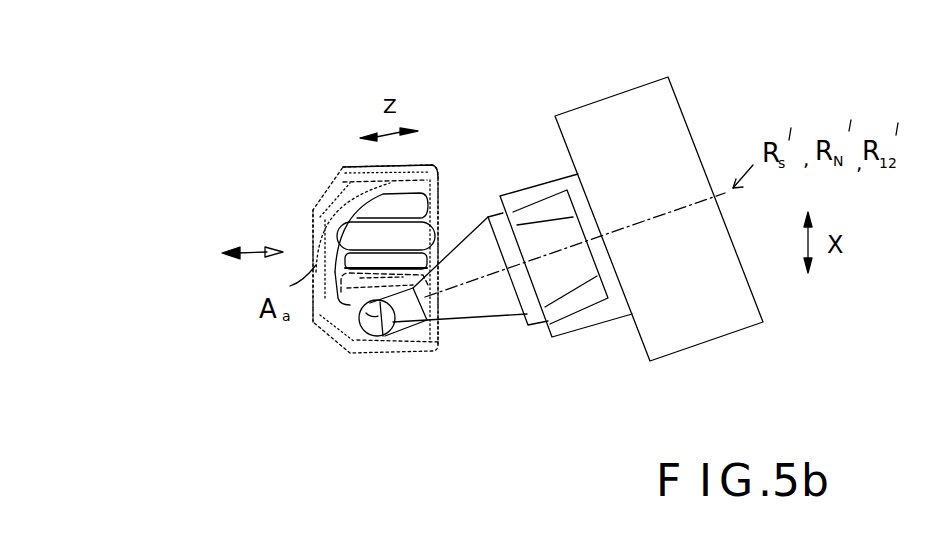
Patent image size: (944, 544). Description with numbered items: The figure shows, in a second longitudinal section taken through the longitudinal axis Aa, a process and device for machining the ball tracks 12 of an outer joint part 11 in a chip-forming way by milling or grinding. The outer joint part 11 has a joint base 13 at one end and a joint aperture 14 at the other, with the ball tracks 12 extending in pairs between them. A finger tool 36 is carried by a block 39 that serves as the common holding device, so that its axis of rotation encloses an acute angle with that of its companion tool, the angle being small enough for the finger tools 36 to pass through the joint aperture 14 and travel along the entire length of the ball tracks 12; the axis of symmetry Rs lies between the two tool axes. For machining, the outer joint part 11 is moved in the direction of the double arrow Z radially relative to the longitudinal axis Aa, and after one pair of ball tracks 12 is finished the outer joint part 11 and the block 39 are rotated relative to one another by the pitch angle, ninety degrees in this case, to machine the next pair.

The outer joint part 11 is at (333, 160).
The ball tracks 12 is at (410, 336).
The joint base 13 is at (316, 213).
The joint aperture 14 is at (440, 195).
The finger tools 36 is at (459, 258).
The sensor block 39 is at (667, 108).